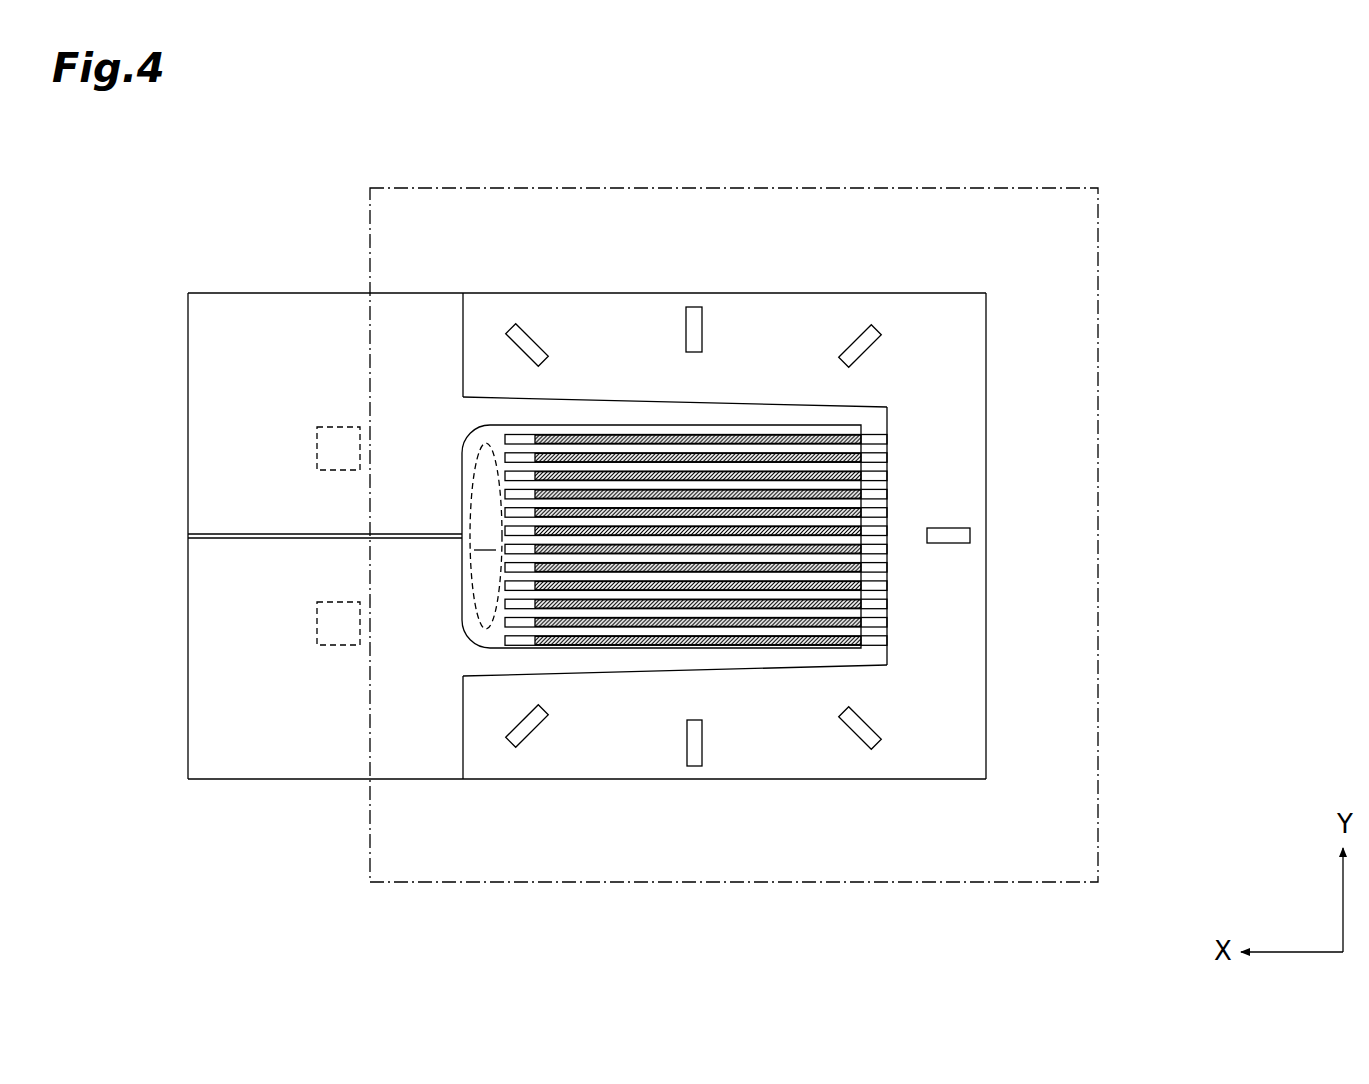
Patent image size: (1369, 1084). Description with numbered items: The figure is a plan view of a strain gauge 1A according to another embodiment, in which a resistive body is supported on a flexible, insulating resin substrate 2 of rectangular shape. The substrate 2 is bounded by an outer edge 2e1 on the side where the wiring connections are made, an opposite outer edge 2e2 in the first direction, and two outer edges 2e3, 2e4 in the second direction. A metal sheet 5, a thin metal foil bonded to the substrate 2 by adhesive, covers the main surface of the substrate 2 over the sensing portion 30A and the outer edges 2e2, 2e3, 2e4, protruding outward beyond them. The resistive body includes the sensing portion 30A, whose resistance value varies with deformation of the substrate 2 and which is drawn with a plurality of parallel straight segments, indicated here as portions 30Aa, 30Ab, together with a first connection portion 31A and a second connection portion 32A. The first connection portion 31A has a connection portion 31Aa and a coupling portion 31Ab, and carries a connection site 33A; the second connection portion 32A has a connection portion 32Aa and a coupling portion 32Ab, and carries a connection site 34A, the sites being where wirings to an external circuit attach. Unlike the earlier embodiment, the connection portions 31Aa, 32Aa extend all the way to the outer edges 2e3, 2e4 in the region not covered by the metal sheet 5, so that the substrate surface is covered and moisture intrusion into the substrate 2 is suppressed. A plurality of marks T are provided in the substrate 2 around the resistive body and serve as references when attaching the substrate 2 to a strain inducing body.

The strain gauge 1A is at (1180, 145).
The metal sheet 5 is at (1057, 185).
The substrate 2 is at (632, 531).
The outer edge 2e1 is at (188, 627).
The outer edge 2e2 is at (986, 403).
The outer edge 2e3 is at (218, 293).
The outer edge 2e4 is at (213, 780).
The first connection portion 31A is at (273, 308).
The connection portion 31Aa is at (217, 343).
The coupling portion 31Ab is at (600, 414).
The second connection portion 32A is at (264, 758).
The connection portion 32Aa is at (207, 698).
The coupling portion 32Ab is at (565, 657).
The connection site 33A is at (337, 427).
The connection site 34A is at (325, 645).
The sensing portion 30A is at (752, 650).
The electrode fingers 30Aa is at (647, 632).
The bus bar 30Ab is at (875, 624).
The mark T is at (955, 535).